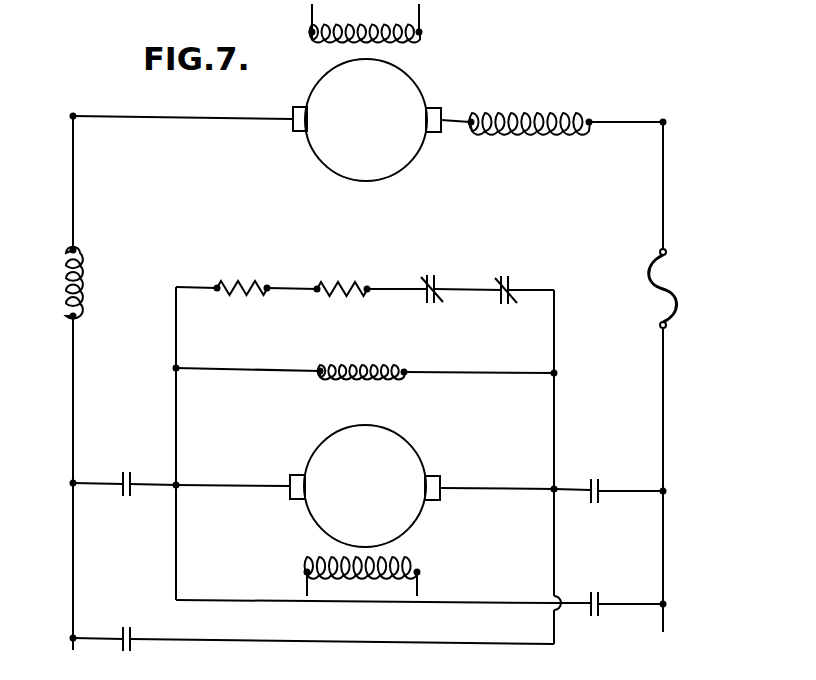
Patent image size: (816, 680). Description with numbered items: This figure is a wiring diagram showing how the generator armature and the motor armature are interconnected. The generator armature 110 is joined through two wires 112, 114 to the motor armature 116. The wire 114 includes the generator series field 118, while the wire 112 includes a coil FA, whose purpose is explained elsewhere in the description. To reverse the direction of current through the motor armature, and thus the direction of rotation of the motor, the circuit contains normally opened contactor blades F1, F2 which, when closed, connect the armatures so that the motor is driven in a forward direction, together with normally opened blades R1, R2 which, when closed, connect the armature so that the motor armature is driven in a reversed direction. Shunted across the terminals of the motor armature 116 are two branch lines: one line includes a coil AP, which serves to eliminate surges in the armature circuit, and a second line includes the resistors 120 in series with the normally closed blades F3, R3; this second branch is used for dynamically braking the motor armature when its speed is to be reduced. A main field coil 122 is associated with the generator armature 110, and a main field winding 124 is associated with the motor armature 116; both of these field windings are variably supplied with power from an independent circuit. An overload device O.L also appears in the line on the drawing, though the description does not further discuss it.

The generator armature 110 is at (411, 79).
The wire 112 is at (240, 117).
The wire 114 is at (633, 122).
The motor armature 116 is at (421, 456).
The generator series field 118 is at (538, 128).
The resistors 120 is at (317, 283).
The main field coil 122 is at (420, 34).
The main field winding 124 is at (418, 564).
The coil FA is at (89, 283).
The coil AP is at (398, 364).
The overload relay O.L is at (681, 288).
The normally opened contactor blade F1 is at (124, 470).
The normally opened contactor blade F2 is at (610, 478).
The normally closed blade F3 is at (452, 262).
The normally opened blade R1 is at (313, 624).
The normally opened blade R2 is at (613, 594).
The normally closed blade R3 is at (524, 262).